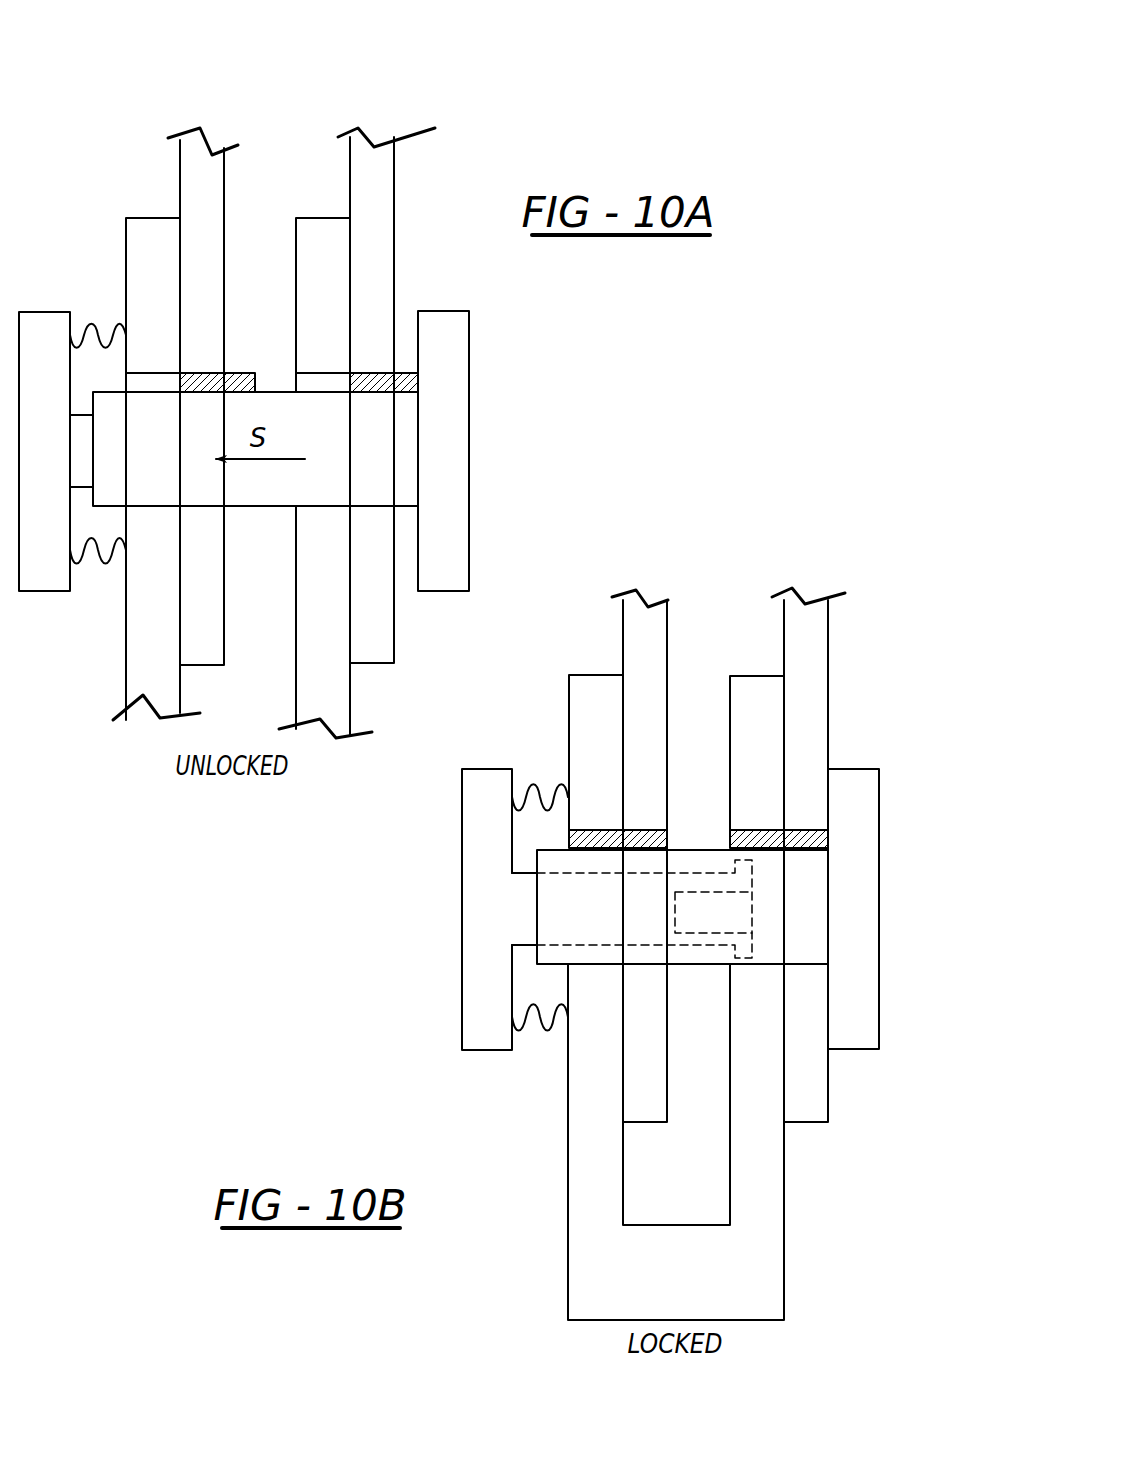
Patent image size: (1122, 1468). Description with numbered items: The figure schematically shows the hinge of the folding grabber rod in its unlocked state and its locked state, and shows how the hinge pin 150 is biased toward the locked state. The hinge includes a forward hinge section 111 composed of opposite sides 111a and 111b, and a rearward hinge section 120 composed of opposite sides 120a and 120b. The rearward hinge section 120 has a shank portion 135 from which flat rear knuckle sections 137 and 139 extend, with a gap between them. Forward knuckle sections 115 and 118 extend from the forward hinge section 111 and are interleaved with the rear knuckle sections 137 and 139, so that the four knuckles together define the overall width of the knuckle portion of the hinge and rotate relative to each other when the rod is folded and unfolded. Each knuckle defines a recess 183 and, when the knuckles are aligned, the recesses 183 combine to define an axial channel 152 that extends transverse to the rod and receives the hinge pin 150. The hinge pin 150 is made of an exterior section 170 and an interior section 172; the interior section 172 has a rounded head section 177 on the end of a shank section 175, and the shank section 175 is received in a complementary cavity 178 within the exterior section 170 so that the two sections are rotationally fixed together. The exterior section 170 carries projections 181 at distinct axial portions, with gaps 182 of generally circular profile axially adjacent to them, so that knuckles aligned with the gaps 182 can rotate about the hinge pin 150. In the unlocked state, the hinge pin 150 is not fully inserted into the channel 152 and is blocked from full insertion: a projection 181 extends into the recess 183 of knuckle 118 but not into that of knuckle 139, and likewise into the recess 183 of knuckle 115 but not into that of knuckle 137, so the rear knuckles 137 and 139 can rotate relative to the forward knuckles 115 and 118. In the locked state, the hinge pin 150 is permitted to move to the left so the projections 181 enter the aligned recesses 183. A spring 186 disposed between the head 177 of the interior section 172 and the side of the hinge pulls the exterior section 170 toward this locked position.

In FIG. 10B, the forward hinge section 111 is at (752, 720).
In FIG. 10B, the side of forward hinge section 111a is at (810, 705).
In FIG. 10B, the side of forward hinge section 111b is at (665, 665).
In FIG. 10A, the forward knuckle section 115 is at (208, 195).
In FIG. 10B, the forward knuckle section 115 is at (630, 605).
In FIG. 10A, the forward knuckle section 118 is at (375, 170).
In FIG. 10B, the forward knuckle section 118 is at (805, 620).
In FIG. 10B, the rearward hinge section 120 is at (659, 1164).
In FIG. 10B, the side of rearward hinge section 120a is at (588, 1187).
In FIG. 10B, the side of rearward hinge section 120b is at (730, 1131).
In FIG. 10B, the shank portion 135 is at (722, 1295).
In FIG. 10A, the rear knuckle section 137 is at (145, 626).
In FIG. 10B, the rear knuckle section 137 is at (597, 1097).
In FIG. 10A, the rear knuckle section 139 is at (335, 620).
In FIG. 10B, the rear knuckle section 139 is at (770, 1165).
In FIG. 10A, the hinge pin 150 is at (484, 403).
In FIG. 10A, the axial channel 152 is at (322, 392).
In FIG. 10B, the exterior section 170 is at (823, 912).
In FIG. 10B, the interior section 172 is at (480, 826).
In FIG. 10B, the shank section 175 is at (600, 898).
In FIG. 10B, the rounded head section 177 is at (473, 972).
In FIG. 10B, the cavity 178 is at (665, 945).
In FIG. 10B, the projections 181 is at (640, 833).
In FIG. 10B, the gaps 182 is at (555, 848).
In FIG. 10A, the recess 183 is at (373, 373).
In FIG. 10B, the spring 186 is at (527, 800).